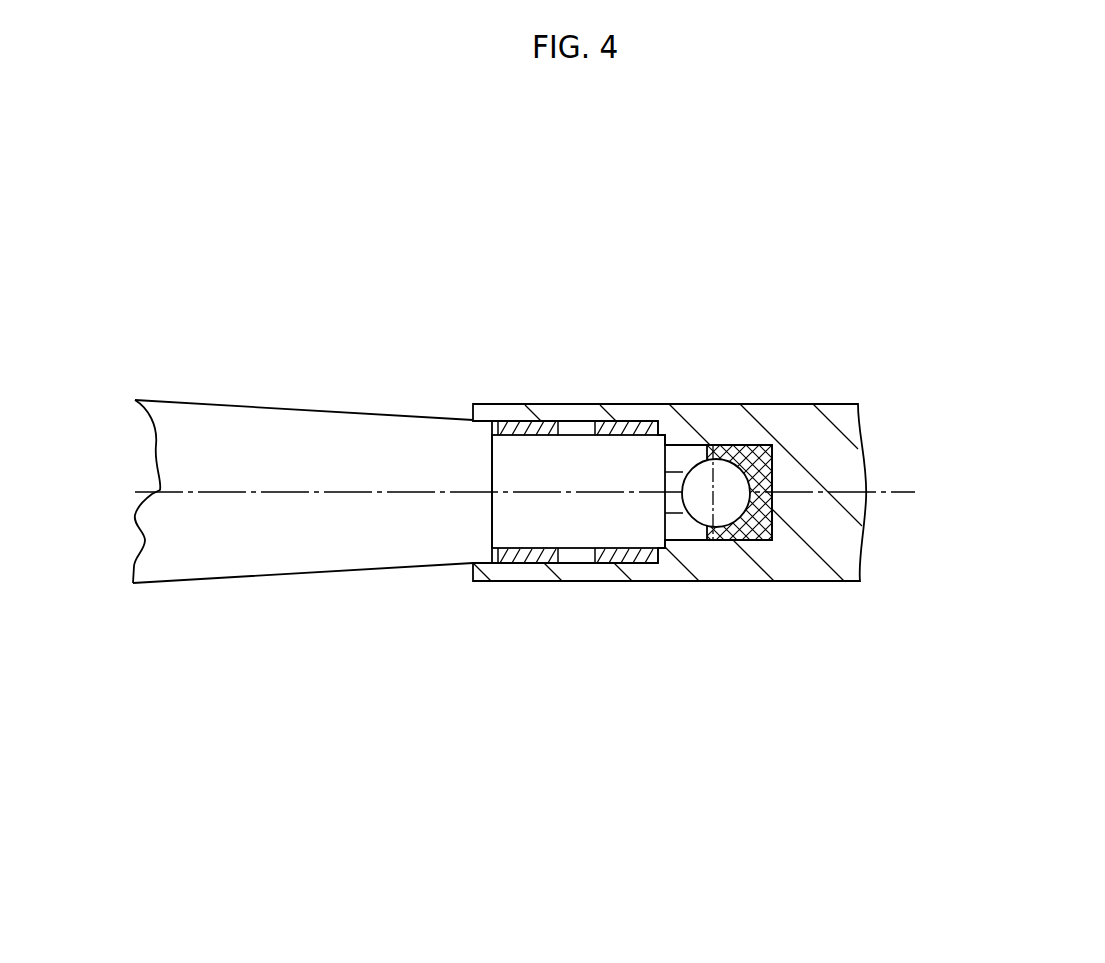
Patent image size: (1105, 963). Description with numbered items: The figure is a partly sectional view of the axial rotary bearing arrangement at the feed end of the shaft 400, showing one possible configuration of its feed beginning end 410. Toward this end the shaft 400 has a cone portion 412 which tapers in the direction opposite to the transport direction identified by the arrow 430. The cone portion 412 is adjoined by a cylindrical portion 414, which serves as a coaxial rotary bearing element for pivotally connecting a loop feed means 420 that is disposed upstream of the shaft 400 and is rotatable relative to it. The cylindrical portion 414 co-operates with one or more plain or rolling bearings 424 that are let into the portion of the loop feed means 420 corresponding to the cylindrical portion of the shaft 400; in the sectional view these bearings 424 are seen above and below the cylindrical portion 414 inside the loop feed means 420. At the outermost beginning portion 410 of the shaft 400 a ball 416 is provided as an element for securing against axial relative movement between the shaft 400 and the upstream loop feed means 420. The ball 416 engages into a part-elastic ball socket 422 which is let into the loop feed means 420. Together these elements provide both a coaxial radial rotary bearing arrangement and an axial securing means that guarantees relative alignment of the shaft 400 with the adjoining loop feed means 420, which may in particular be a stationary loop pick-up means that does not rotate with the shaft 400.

The shaft 400 is at (138, 309).
The feed beginning end 410 is at (347, 378).
The cone portion 412 is at (217, 718).
The cylindrical portion 414 is at (600, 718).
The ball 416 is at (787, 718).
The loop feed means 420 is at (1003, 362).
The ball socket 422 is at (762, 445).
The plain or rolling bearings 424 is at (580, 427).
The arrow 430 is at (545, 922).